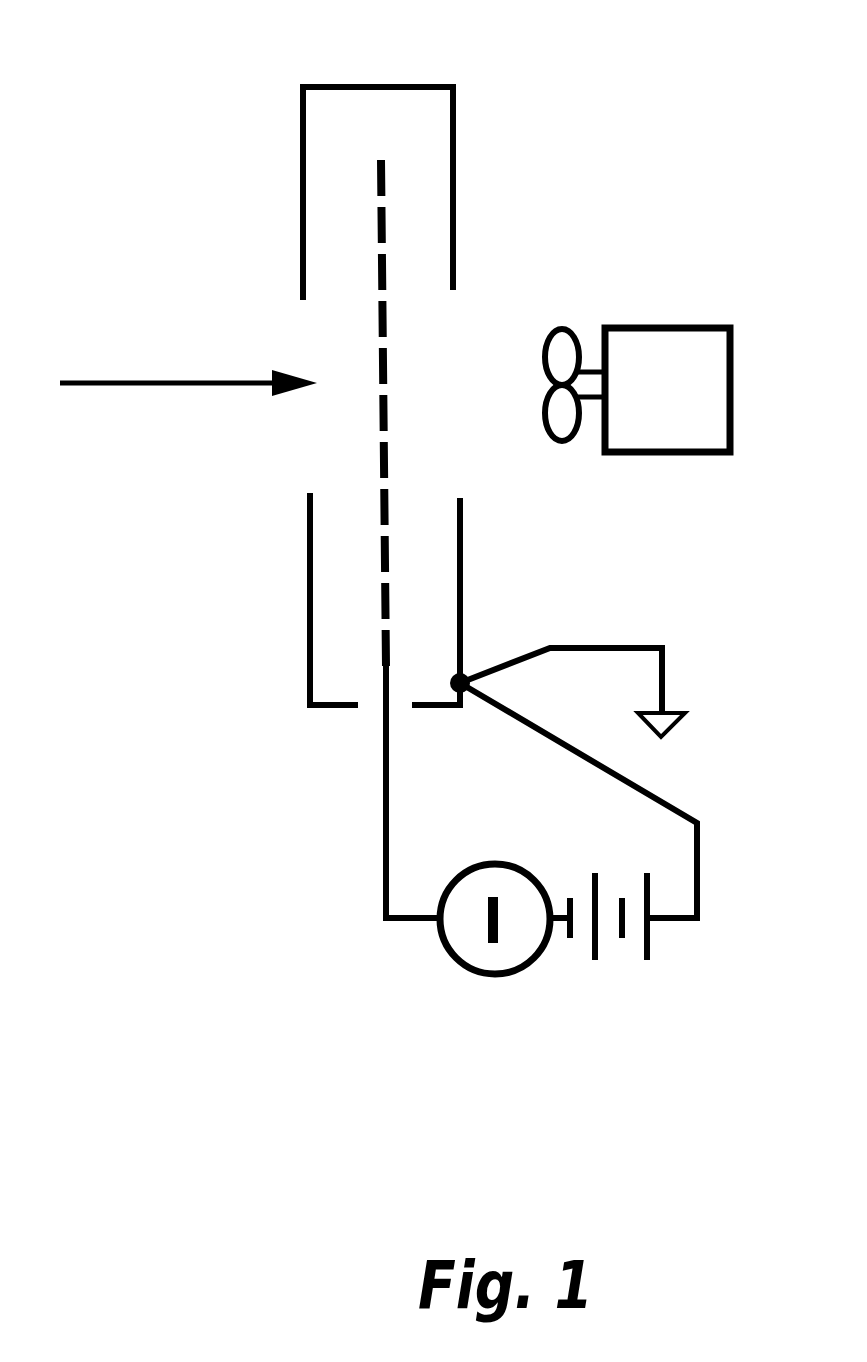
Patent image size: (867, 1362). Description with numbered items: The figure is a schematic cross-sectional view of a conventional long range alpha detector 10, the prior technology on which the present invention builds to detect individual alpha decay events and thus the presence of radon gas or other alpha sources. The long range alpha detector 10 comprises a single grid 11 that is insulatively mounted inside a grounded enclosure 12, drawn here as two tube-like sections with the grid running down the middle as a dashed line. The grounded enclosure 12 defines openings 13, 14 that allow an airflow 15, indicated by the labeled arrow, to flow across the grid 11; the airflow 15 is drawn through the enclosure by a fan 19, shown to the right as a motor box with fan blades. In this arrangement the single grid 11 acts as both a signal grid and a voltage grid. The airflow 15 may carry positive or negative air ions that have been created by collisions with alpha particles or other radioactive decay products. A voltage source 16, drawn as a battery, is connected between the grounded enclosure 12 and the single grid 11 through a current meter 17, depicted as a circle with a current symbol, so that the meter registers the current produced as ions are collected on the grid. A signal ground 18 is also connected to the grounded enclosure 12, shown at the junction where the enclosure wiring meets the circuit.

The long range alpha detector 10 is at (300, 32).
The single grid 11 is at (383, 178).
The grounded enclosure 12 is at (297, 147).
The opening 13 is at (460, 492).
The opening 14 is at (303, 487).
The airflow 15 is at (157, 393).
The voltage source 16 is at (653, 945).
The current meter 17 is at (457, 963).
The signal ground 18 is at (667, 660).
The fan 19 is at (660, 323).